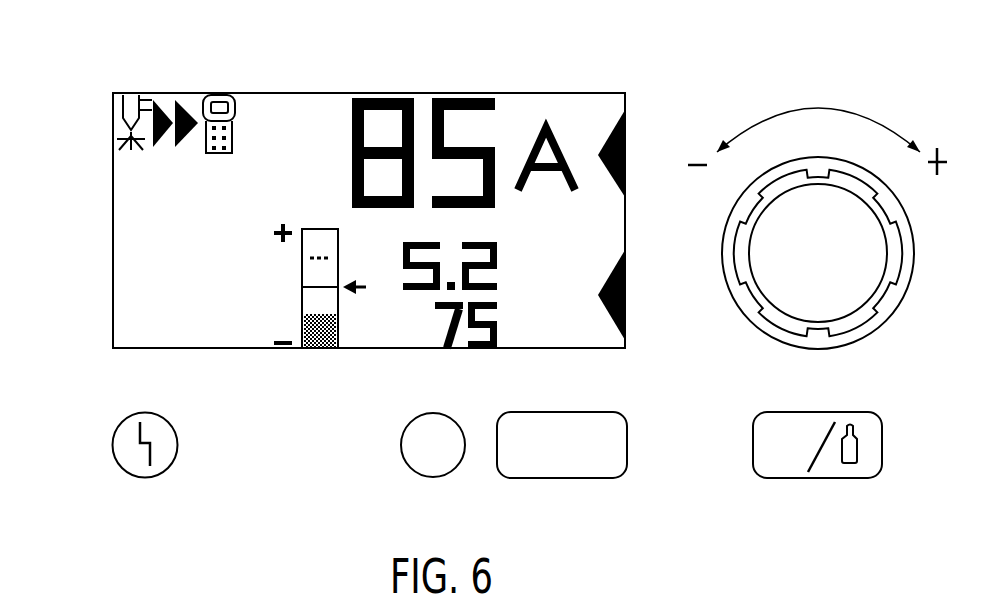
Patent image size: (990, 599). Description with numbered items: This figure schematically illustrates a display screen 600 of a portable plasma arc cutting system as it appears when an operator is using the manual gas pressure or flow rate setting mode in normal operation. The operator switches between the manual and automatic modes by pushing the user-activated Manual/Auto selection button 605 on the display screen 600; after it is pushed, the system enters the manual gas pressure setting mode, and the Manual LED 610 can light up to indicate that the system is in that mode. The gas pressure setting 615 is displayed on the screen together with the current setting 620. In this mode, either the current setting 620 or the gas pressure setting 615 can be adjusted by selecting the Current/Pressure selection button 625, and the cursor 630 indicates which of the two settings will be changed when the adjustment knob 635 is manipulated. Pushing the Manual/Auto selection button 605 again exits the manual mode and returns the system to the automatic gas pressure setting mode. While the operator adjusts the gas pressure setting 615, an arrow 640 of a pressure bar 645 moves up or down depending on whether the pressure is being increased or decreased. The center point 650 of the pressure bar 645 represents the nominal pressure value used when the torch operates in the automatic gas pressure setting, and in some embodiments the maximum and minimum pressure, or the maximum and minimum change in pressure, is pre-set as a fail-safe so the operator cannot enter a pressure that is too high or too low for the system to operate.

The display screen 600 is at (137, 216).
The Manual/Auto selection button 605 is at (560, 478).
The Manual LED 610 is at (433, 477).
The gas pressure setting 615 is at (393, 285).
The current setting 620 is at (463, 127).
The Current/Pressure selection button 625 is at (818, 478).
The cursor 630 is at (628, 148).
The adjustment knob 635 is at (903, 254).
The arrow 640 is at (363, 286).
The pressure bar 645 is at (320, 347).
The center point 650 is at (302, 287).